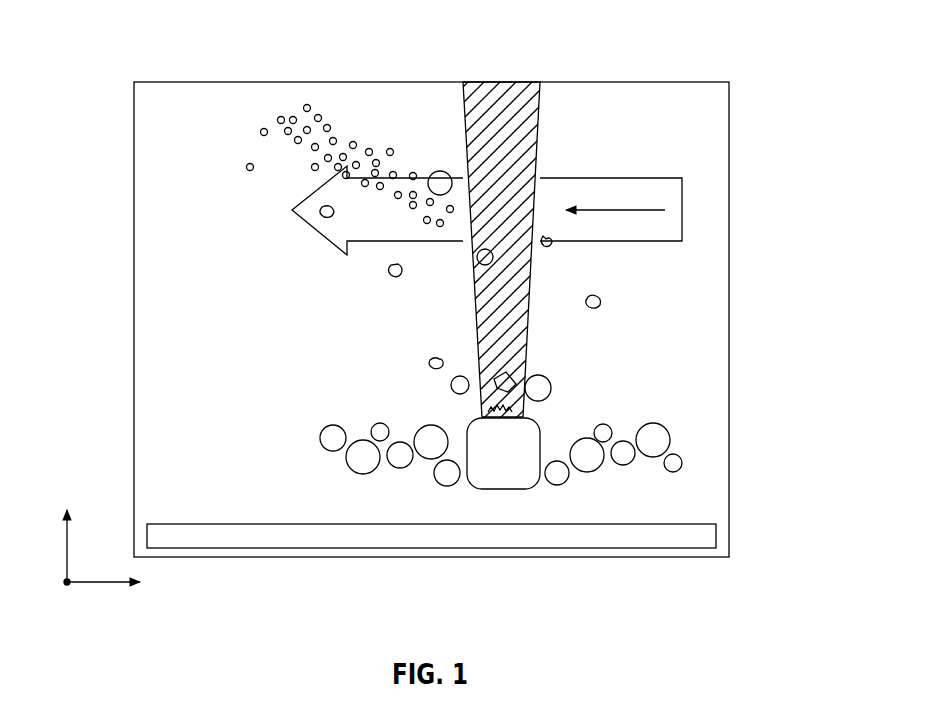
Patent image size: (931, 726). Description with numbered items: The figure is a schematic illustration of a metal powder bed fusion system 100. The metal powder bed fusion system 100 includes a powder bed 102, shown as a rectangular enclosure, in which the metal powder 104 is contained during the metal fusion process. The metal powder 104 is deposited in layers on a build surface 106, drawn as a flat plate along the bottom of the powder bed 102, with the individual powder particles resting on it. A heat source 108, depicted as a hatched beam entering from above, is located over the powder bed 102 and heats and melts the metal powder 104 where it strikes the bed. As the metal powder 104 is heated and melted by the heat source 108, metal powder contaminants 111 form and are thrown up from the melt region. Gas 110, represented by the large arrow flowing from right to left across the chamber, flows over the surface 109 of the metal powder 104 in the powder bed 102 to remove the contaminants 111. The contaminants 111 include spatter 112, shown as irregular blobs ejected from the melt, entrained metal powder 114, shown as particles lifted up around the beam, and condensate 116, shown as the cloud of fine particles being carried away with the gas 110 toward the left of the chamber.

The metal powder bed fusion system 100 is at (758, 33).
The powder bed 102 is at (729, 372).
The metal powder 104 is at (653, 440).
The build surface 106 is at (577, 535).
The heat source 108 is at (524, 134).
The surface of the metal powder 109 is at (368, 418).
The gas 110 is at (617, 207).
The contaminants 111 is at (533, 377).
The spatter 112 is at (593, 298).
The entrained metal powder 114 is at (462, 293).
The condensate 116 is at (291, 147).